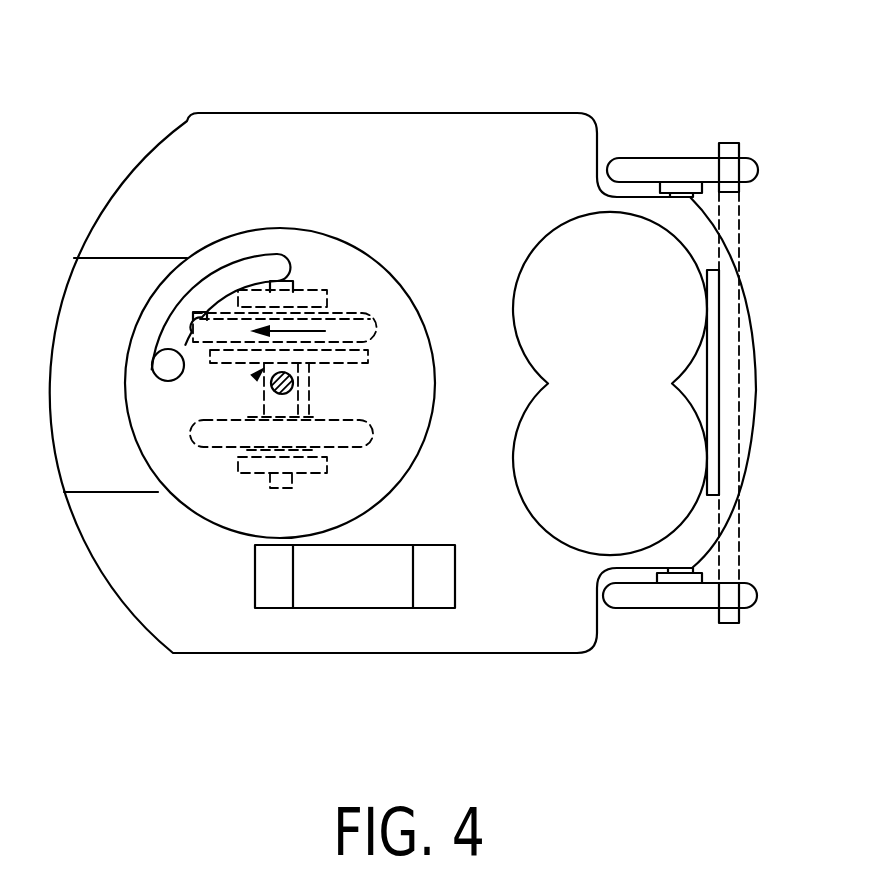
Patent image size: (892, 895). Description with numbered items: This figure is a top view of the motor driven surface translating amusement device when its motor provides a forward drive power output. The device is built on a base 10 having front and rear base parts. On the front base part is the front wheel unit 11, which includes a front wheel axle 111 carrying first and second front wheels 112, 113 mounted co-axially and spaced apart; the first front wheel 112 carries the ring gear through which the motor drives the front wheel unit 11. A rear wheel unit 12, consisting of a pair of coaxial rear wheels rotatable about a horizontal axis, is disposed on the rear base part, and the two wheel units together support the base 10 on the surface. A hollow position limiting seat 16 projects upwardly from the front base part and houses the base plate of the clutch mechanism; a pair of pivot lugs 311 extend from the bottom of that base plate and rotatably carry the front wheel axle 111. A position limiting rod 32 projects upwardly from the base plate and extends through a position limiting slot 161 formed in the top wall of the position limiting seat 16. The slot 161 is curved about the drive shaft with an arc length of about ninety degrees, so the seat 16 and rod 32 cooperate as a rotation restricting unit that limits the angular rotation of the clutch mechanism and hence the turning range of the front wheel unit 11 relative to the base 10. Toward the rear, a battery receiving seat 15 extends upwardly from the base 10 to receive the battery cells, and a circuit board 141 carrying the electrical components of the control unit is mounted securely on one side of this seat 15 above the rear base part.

The base 10 is at (482, 132).
The position limiting seat 16 is at (317, 245).
The position limiting slot 161 is at (232, 277).
The position limiting rod 32 is at (165, 368).
The pivot lugs 311 is at (313, 290).
The first front wheel 112 is at (368, 345).
The front wheel unit 11 is at (254, 379).
The second front wheel 113 is at (218, 442).
The front wheel axle 111 is at (273, 478).
The battery receiving seat 15 is at (648, 322).
The circuit board 141 is at (727, 287).
The rear wheel unit 12 is at (665, 594).